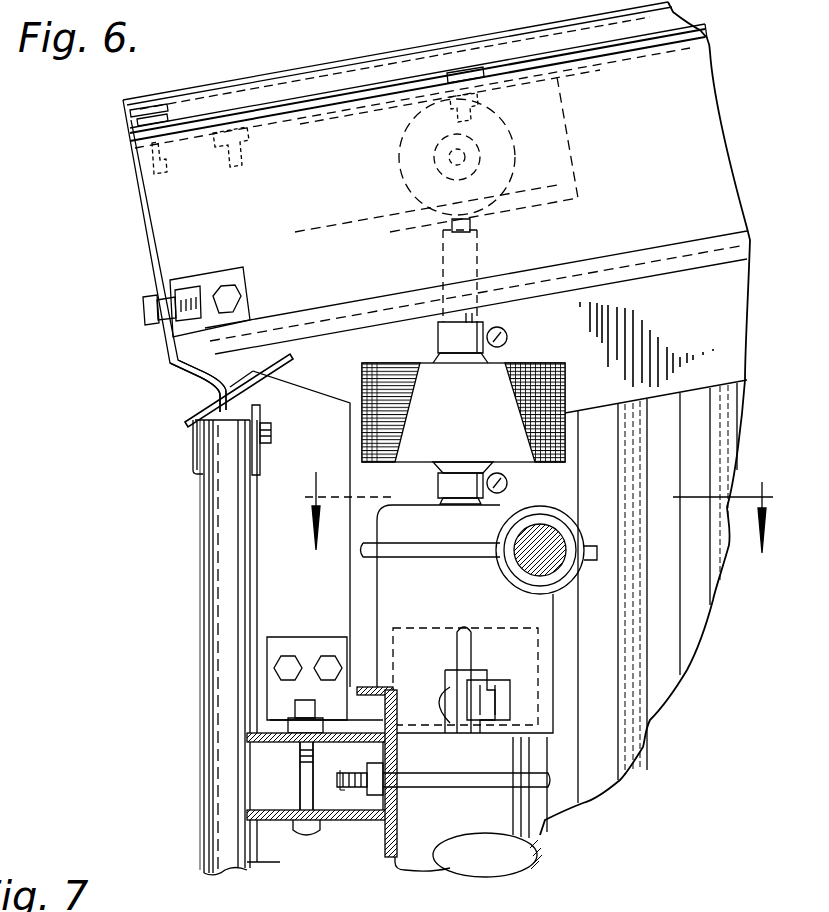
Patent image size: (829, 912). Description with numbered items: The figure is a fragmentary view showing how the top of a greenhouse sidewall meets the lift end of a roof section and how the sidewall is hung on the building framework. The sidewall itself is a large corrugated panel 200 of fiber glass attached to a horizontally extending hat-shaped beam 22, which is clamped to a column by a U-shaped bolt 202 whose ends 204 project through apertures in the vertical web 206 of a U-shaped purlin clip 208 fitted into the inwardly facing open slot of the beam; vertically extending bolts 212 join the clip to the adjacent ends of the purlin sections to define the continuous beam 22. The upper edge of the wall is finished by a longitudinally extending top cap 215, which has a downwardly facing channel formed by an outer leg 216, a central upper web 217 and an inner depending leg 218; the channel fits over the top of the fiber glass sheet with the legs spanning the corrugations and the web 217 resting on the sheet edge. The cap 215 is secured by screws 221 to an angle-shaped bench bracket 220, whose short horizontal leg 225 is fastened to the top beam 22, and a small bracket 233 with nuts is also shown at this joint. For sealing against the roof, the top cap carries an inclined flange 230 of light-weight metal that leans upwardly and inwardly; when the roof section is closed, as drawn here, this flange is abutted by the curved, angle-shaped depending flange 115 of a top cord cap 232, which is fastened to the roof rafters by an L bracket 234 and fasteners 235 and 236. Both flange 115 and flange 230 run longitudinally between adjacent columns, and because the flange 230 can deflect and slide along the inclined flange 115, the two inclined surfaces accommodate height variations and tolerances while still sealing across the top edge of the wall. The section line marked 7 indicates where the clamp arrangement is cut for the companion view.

The top cord cap 232 is at (137, 168).
The L bracket 234 is at (205, 283).
The fastener 236 is at (143, 302).
The fastener 235 is at (249, 292).
The inclined flange 230 is at (278, 350).
The depending flange 115 is at (200, 395).
The top cap 215 is at (195, 447).
The outer leg 216 is at (197, 473).
The bench bracket 220 is at (250, 563).
The corrugated panel 200 is at (207, 705).
The central upper web 217 is at (237, 422).
The screws 221 is at (268, 433).
The bracket with nuts 233 is at (253, 613).
The inner depending leg 218 is at (415, 374).
The section line 7- 7 is at (539, 502).
The beam 22 is at (371, 828).
The purlin clip 208 is at (334, 775).
The bolt ends 204 is at (353, 788).
The short horizontal leg 225 is at (257, 728).
The vertical bolts 212 is at (300, 826).
The vertical web 206 is at (400, 758).
The U-shaped bolt 202 is at (430, 778).